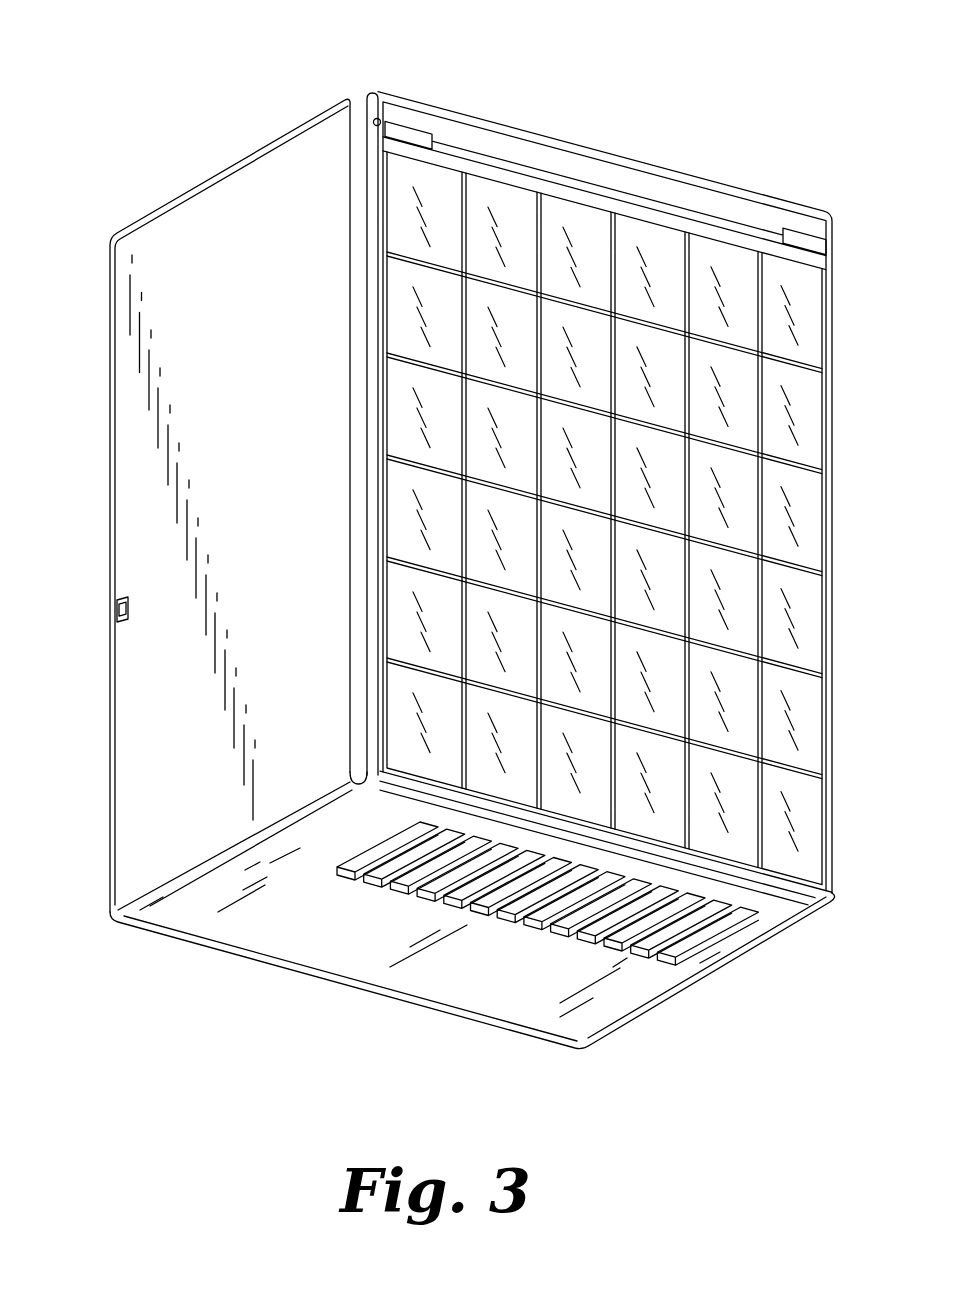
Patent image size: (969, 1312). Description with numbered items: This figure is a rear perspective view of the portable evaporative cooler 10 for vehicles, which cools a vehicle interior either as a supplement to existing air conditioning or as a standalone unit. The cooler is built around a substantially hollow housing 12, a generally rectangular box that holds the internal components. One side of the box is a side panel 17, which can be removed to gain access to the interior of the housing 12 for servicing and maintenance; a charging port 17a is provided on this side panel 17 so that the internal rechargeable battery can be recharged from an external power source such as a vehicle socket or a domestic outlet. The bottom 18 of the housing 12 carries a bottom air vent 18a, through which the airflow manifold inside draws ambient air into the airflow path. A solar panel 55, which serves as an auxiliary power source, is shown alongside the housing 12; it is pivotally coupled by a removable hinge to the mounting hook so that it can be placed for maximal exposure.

The portable evaporative cooler 10 is at (126, 69).
The housing 12 is at (73, 312).
The side panel 17 is at (283, 407).
The charging port 17a is at (120, 606).
The bottom 18 is at (548, 987).
The bottom air vent 18a is at (727, 947).
The solar panel 55 is at (805, 540).